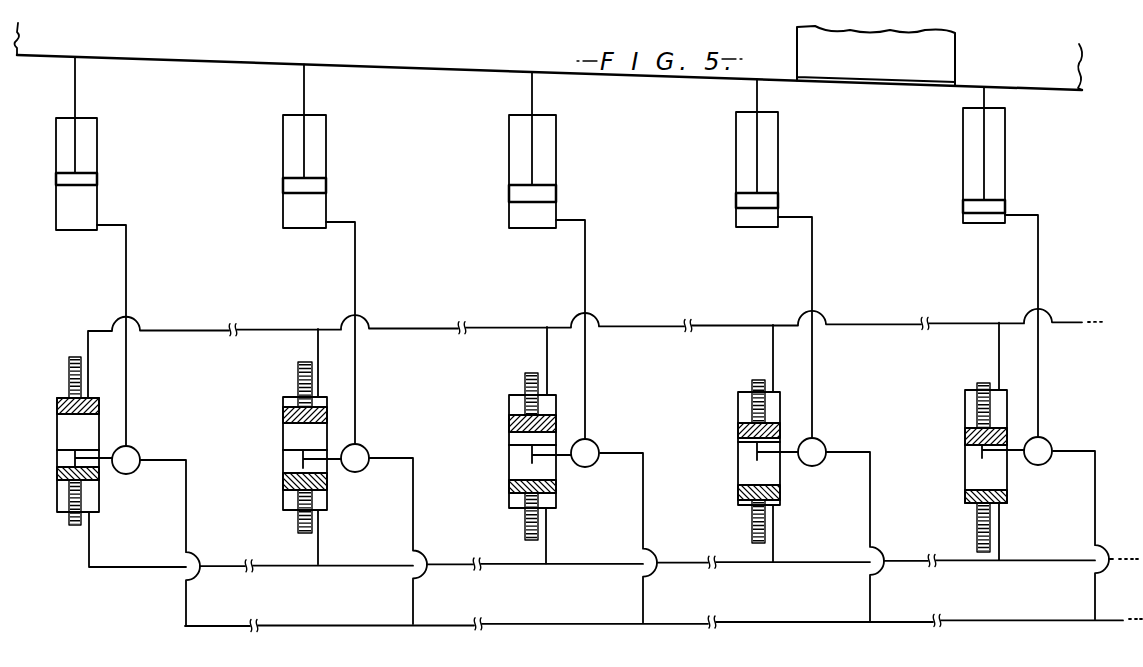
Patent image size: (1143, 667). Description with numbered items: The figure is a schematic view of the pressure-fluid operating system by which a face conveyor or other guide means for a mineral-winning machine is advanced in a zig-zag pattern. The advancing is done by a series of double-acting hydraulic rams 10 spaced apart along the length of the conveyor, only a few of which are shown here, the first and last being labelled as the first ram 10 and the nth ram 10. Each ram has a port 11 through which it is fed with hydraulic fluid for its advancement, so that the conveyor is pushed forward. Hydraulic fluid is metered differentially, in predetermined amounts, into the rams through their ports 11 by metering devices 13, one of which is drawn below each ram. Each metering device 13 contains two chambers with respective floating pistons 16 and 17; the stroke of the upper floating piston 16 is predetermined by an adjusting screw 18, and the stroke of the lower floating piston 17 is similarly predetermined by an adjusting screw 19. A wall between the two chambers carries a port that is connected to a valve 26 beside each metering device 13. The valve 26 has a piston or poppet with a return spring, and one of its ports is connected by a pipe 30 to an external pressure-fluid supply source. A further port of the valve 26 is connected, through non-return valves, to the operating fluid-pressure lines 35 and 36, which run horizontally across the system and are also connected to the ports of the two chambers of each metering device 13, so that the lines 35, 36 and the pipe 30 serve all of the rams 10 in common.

The double-acting hydraulic ram 10 is at (100, 150).
The port 11 is at (100, 222).
The metering device 13 is at (96, 467).
The floating piston 16 is at (57, 404).
The floating piston 17 is at (58, 475).
The adjusting screw 18 is at (68, 372).
The adjusting screw 19 is at (70, 517).
The valve 26 is at (140, 450).
The pipe 30 is at (695, 623).
The operating fluid-pressure line 35 is at (882, 322).
The operating fluid-pressure line 36 is at (675, 562).